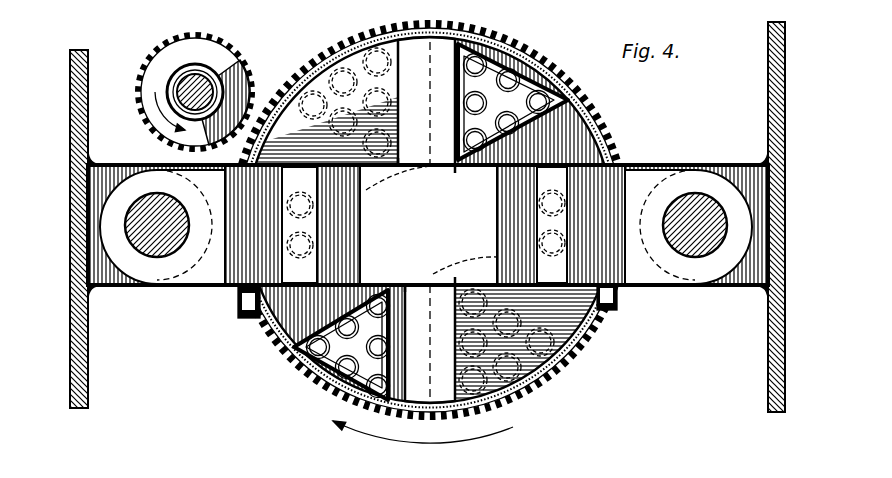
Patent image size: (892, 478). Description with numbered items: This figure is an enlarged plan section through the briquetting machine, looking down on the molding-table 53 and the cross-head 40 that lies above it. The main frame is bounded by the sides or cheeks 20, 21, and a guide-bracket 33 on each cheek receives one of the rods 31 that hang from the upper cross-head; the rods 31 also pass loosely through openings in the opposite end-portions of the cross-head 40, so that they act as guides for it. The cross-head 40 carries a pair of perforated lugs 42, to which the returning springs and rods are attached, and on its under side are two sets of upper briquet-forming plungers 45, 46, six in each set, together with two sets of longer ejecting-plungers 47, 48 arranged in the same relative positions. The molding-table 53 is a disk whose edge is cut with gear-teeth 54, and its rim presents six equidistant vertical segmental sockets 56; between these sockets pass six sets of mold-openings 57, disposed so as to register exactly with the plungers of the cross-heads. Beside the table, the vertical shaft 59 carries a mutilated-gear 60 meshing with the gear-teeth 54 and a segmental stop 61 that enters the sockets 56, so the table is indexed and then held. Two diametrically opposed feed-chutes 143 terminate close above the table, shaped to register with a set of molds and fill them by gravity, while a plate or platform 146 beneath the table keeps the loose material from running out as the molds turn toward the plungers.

The side or cheek 20 is at (88, 343).
The side or cheek 21 is at (768, 356).
The rod 31 is at (160, 250).
The guide-bracket 33 is at (106, 172).
The cross-head 40 is at (428, 225).
The perforated lug 42 is at (238, 308).
The upper briquet-forming plungers 45 is at (362, 212).
The upper briquet-forming plungers 46 is at (497, 241).
The ejecting-plungers 47 is at (398, 133).
The ejecting-plungers 48 is at (452, 346).
The molding-table 53 is at (562, 147).
The gear-teeth 54 is at (560, 78).
The segmental socket 56 is at (592, 112).
The mold-openings 57 is at (432, 225).
The vertical shaft 59 is at (208, 78).
The mutilated-gear 60 is at (170, 57).
The segmental stop 61 is at (280, 78).
The feed-chute 143 is at (535, 53).
The plate or platform 146 is at (431, 221).